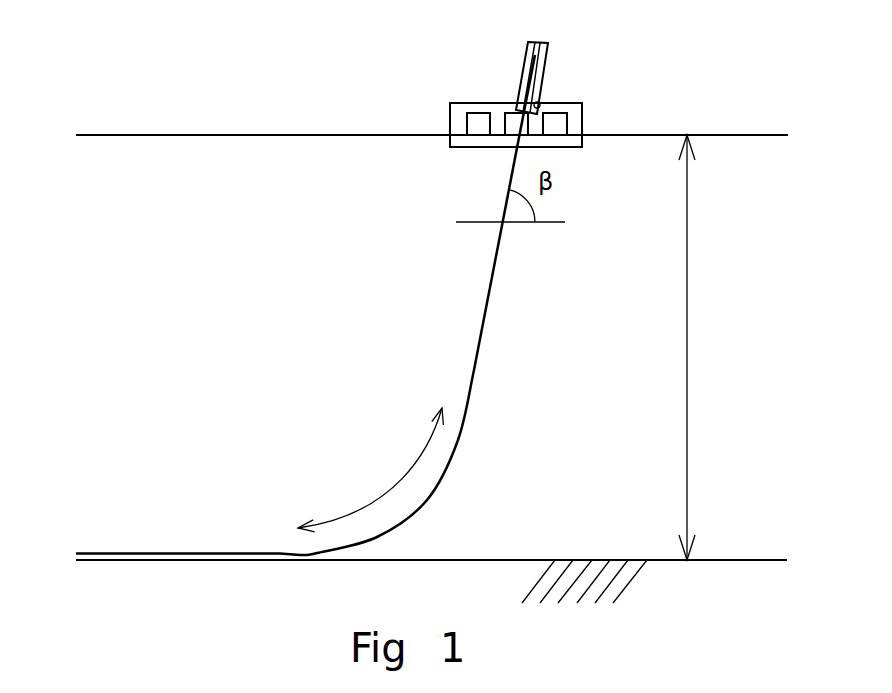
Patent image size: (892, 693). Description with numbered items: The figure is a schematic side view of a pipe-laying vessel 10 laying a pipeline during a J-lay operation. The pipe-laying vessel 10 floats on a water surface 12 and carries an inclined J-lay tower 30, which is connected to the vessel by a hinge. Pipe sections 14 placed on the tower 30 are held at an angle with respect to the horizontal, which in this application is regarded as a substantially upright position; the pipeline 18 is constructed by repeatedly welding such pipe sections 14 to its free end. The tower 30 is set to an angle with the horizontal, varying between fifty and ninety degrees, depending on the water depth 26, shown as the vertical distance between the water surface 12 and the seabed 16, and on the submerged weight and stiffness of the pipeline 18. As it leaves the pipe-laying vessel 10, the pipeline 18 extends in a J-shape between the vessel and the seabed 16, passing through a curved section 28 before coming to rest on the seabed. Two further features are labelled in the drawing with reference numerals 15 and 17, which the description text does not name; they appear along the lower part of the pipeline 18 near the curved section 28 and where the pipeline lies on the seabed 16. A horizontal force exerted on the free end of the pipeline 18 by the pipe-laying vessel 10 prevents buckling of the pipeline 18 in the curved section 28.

The pipe-laying vessel 10 is at (413, 122).
The water surface 12 is at (272, 135).
The pipe sections 14 is at (525, 80).
The sagbend portion of pipeline 15 is at (475, 372).
The seabed 16 is at (562, 560).
The pipeline lying on seabed 17 is at (223, 552).
The pipeline 18 is at (492, 283).
The water depth 26 is at (687, 353).
The curved section 28 is at (403, 480).
The J-lay tower 30 is at (545, 72).